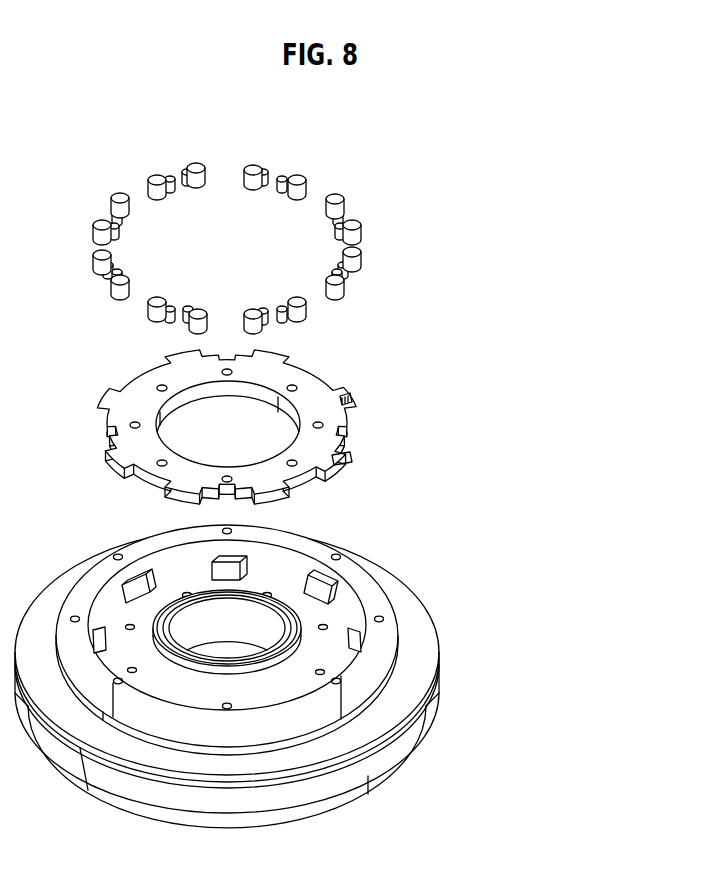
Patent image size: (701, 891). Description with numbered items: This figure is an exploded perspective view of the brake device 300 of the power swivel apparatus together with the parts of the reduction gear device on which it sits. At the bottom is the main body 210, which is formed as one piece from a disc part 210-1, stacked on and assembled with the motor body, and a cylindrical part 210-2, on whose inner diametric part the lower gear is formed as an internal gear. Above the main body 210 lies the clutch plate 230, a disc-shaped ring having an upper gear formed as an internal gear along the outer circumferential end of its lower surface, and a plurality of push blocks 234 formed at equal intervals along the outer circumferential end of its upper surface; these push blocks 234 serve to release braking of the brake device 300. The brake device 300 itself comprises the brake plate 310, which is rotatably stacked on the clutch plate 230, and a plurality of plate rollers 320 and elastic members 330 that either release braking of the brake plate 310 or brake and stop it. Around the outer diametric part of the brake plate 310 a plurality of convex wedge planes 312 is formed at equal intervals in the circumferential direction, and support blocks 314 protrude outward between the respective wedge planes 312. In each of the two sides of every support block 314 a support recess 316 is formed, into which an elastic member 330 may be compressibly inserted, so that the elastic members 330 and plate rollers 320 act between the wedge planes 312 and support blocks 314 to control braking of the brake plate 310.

The brake device 300 is at (281, 333).
The brake plate 310 is at (263, 407).
The convex wedge plane 312 is at (140, 374).
The support block 314 is at (358, 460).
The support recess 316 is at (360, 418).
The plate roller 320 is at (157, 297).
The elastic member 330 is at (172, 305).
The main body 210 is at (319, 676).
The disc part 210-1 is at (400, 697).
The cylindrical part 210-2 is at (378, 660).
The clutch plate 230 is at (293, 618).
The push block 234 is at (322, 578).